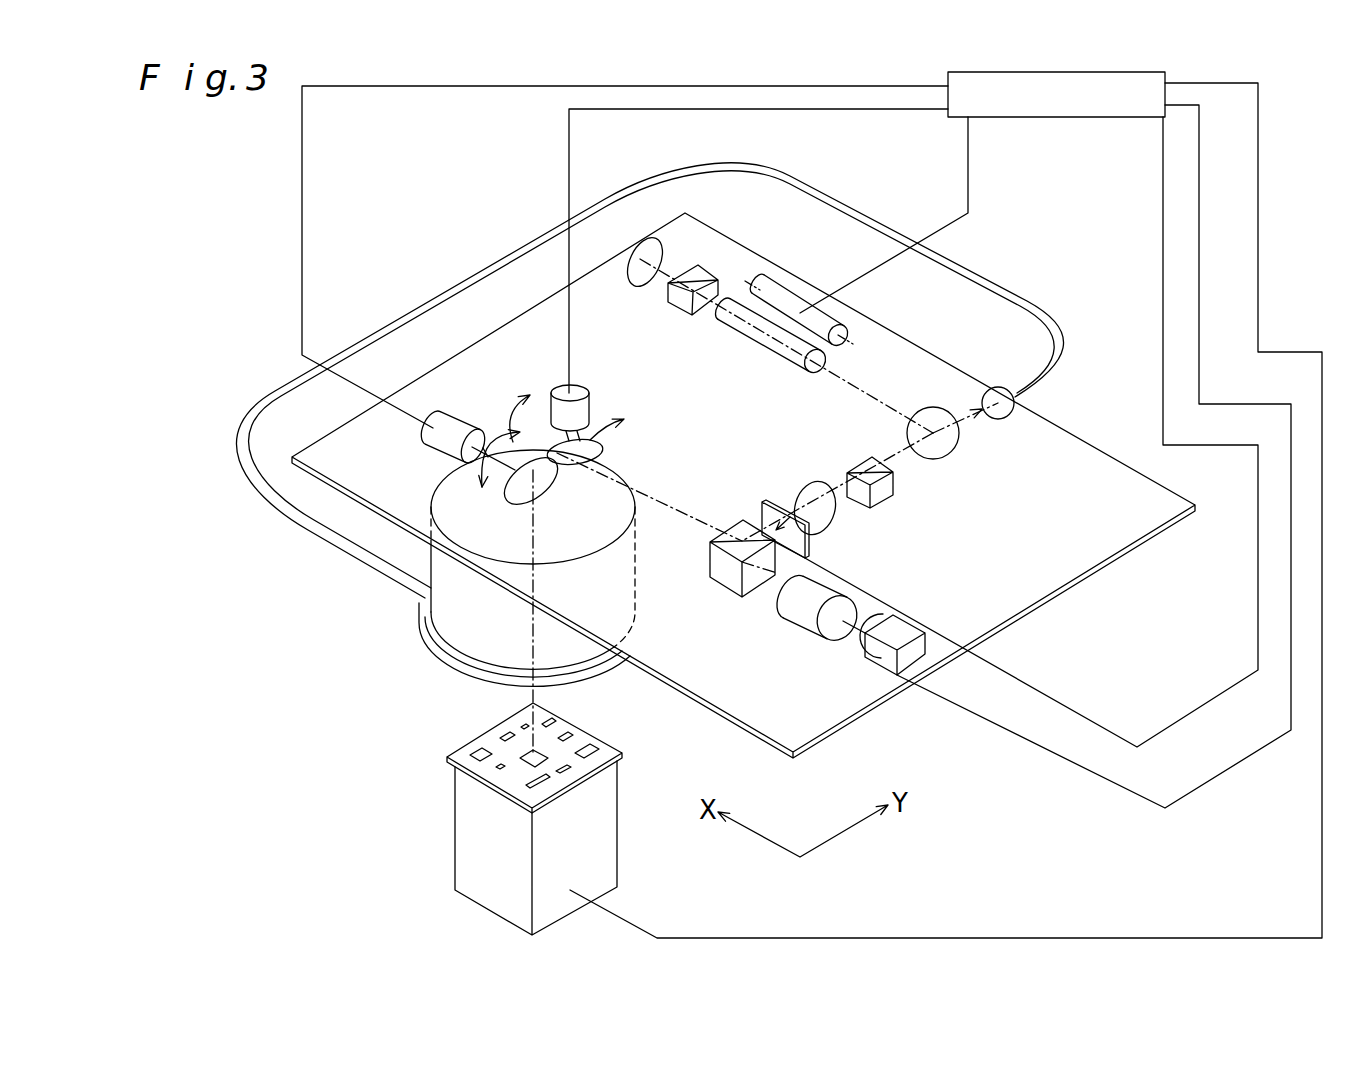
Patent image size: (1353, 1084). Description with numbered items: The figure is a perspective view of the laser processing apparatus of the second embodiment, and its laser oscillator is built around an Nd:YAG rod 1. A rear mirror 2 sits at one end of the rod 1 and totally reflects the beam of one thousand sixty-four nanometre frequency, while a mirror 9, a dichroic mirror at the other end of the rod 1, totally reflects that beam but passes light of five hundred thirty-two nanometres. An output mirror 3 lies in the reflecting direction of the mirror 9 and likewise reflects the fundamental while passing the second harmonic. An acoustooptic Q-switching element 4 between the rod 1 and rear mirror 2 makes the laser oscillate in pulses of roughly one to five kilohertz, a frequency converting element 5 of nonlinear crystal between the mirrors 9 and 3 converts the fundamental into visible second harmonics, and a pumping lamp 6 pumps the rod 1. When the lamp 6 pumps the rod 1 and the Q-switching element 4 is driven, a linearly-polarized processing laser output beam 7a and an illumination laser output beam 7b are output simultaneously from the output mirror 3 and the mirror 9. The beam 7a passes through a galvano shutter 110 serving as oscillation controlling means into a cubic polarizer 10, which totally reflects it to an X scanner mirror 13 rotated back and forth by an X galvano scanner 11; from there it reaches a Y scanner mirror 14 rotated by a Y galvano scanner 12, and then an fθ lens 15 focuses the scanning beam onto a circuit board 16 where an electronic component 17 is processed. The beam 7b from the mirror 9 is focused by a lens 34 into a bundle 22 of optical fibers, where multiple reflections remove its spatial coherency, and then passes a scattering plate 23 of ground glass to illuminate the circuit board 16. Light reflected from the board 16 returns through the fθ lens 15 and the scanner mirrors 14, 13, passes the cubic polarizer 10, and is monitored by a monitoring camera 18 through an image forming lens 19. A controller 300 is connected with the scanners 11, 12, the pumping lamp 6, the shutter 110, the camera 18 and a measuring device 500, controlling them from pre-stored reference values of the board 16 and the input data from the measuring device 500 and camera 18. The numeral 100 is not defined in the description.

The Nd:YAG rod 1 is at (800, 313).
The rear mirror 2 is at (708, 272).
The output mirror 3 is at (832, 530).
The acoustooptic Q-switching element 4 is at (767, 320).
The frequency converting element 5 is at (883, 493).
The pumping lamp 6 is at (828, 303).
The laser output beam (processing laser beam) 7a is at (825, 550).
The laser output beam (illumination laser beam) 7b is at (960, 424).
The mirror 9 is at (938, 408).
The cubic polarizer 10 is at (742, 597).
The X galvano scanner 11 is at (590, 412).
The Y galvano scanner 12 is at (435, 428).
The X scanner mirror 13 is at (558, 392).
The Y scanner mirror 14 is at (510, 407).
The fθ lens 15 is at (437, 477).
The circuit board 16 is at (578, 782).
The electronic component 17 is at (525, 762).
The monitoring camera 18 is at (909, 657).
The image forming lens 19 is at (808, 637).
The bundle of optical fibers 22 is at (273, 520).
The scattering plate 23 is at (435, 655).
The lens 34 is at (1000, 388).
The optical head 100 is at (896, 353).
The galvano shutter 110 is at (768, 502).
The controller 300 is at (952, 72).
The measuring device 500 is at (502, 819).